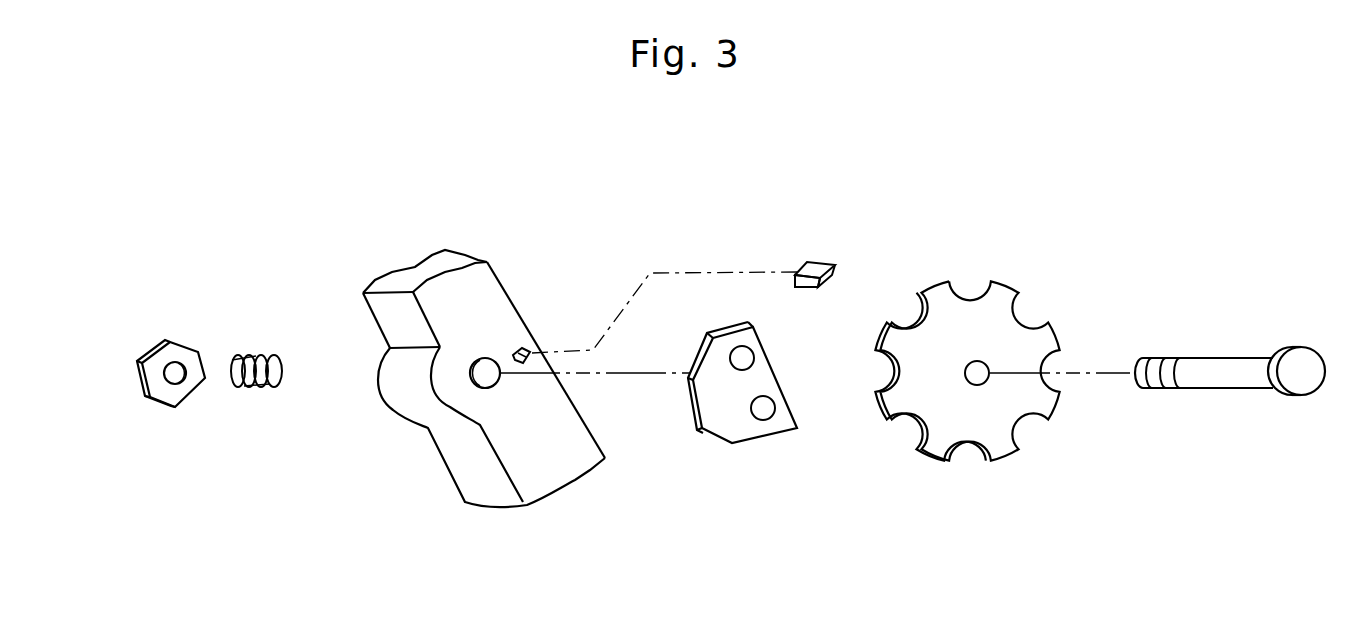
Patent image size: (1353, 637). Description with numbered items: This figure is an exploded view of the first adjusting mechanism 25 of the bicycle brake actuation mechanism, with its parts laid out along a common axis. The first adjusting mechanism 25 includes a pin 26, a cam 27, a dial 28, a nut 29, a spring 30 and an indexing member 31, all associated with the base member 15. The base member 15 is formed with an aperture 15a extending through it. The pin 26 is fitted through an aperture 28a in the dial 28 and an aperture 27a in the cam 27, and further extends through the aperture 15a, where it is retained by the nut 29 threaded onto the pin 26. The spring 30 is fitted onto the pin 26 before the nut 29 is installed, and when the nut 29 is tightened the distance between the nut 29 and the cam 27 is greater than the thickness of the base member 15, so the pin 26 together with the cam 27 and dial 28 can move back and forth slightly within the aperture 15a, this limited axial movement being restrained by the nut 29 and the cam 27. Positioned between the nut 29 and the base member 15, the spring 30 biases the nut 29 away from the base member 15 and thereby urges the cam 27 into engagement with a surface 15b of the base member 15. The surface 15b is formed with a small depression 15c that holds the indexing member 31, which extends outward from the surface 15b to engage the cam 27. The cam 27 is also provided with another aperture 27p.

The base member 15 is at (502, 365).
The aperture 15a is at (477, 385).
The surface 15b is at (492, 320).
The depression 15c is at (530, 352).
The first adjusting mechanism 25 is at (772, 212).
The pin 26 is at (1230, 378).
The cam 27 is at (761, 429).
The aperture 27a is at (748, 362).
The aperture 27p is at (765, 413).
The dial 28 is at (978, 369).
The aperture 28a is at (980, 377).
The nut 29 is at (178, 348).
The spring 30 is at (255, 360).
The indexing member 31 is at (817, 263).